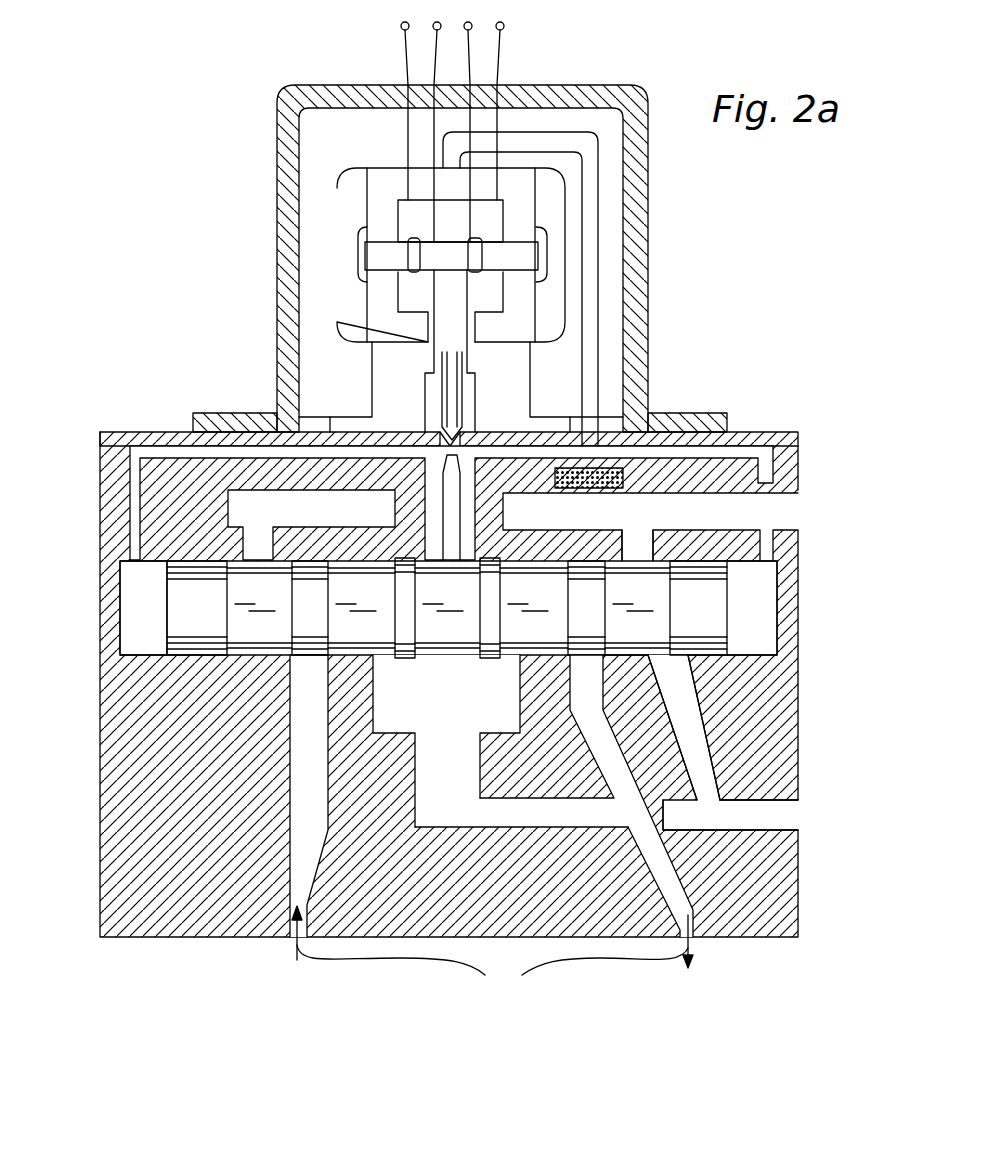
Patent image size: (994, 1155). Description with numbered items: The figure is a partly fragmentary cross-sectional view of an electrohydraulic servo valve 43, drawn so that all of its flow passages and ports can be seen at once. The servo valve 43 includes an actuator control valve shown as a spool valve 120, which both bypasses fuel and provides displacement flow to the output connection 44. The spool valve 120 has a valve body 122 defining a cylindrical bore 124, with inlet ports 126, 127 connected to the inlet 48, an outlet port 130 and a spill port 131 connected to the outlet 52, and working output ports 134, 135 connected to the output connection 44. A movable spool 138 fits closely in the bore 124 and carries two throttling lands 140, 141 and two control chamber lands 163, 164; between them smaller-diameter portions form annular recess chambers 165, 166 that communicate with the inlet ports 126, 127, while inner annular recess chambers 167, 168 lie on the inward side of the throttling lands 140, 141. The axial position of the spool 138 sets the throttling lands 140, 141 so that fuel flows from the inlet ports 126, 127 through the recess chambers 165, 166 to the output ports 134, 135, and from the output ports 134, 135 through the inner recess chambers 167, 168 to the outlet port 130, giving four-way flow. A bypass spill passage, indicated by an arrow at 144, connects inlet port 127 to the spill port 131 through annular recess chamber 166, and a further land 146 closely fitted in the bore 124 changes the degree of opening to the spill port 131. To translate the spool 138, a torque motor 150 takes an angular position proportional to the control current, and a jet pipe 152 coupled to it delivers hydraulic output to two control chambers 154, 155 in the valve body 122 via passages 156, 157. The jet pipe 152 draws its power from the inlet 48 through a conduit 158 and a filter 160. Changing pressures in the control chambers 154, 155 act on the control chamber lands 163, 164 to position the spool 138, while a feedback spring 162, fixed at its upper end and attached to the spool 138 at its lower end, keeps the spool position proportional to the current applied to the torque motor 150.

The electrohydraulic servo valve 43 is at (158, 152).
The output connection 44 is at (492, 950).
The inlet 48 is at (852, 512).
The outlet 52 is at (850, 815).
The spool valve 120 is at (410, 609).
The valve body 122 is at (100, 522).
The cylindrical bore 124 is at (148, 638).
The inlet port 126 is at (258, 543).
The inlet port 127 is at (632, 551).
The outlet port 130 is at (452, 705).
The spill port 131 is at (693, 760).
The working output port 134 is at (303, 852).
The working output port 135 is at (580, 773).
The spool 138 is at (256, 649).
The throttling land 140 is at (310, 637).
The throttling land 141 is at (583, 627).
The bypass spill passage 144 is at (687, 726).
The land 146 is at (660, 657).
The torque motor 150 is at (545, 257).
The jet pipe 152 is at (445, 405).
The control chamber 154 is at (165, 616).
The control chamber 155 is at (757, 624).
The passage 156 is at (152, 440).
The passage 157 is at (768, 460).
The conduit 158 is at (584, 412).
The filter 160 is at (583, 490).
The feedback spring 162 is at (447, 531).
The control chamber land 163 is at (190, 580).
The control chamber land 164 is at (713, 600).
The annular recess chamber 165 is at (272, 648).
The annular recess chamber 166 is at (625, 650).
The annular recess chamber 167 is at (370, 652).
The annular recess chamber 168 is at (520, 652).